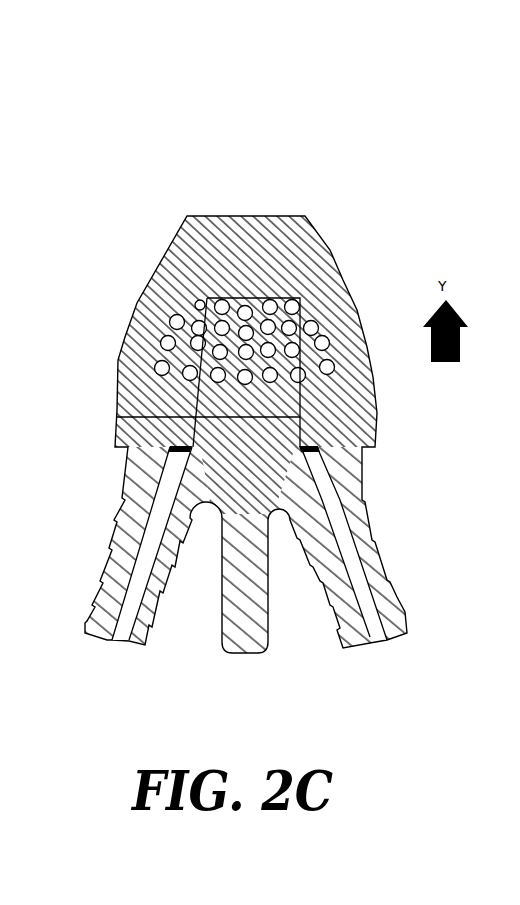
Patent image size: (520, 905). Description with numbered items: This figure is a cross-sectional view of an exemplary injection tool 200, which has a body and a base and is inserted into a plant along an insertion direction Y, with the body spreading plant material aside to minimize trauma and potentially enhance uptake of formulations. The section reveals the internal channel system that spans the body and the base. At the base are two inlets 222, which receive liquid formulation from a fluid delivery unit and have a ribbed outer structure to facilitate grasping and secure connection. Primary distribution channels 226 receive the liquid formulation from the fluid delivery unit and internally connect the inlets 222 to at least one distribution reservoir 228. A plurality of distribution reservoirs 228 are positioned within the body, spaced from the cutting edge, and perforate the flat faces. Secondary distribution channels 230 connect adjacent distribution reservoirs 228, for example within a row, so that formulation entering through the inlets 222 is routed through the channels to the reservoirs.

The injection tool 200 is at (137, 130).
The inlets 222 is at (112, 630).
The primary distribution channels 226 is at (195, 406).
The distribution reservoirs 228 is at (156, 366).
The secondary distribution channels 230 is at (320, 358).